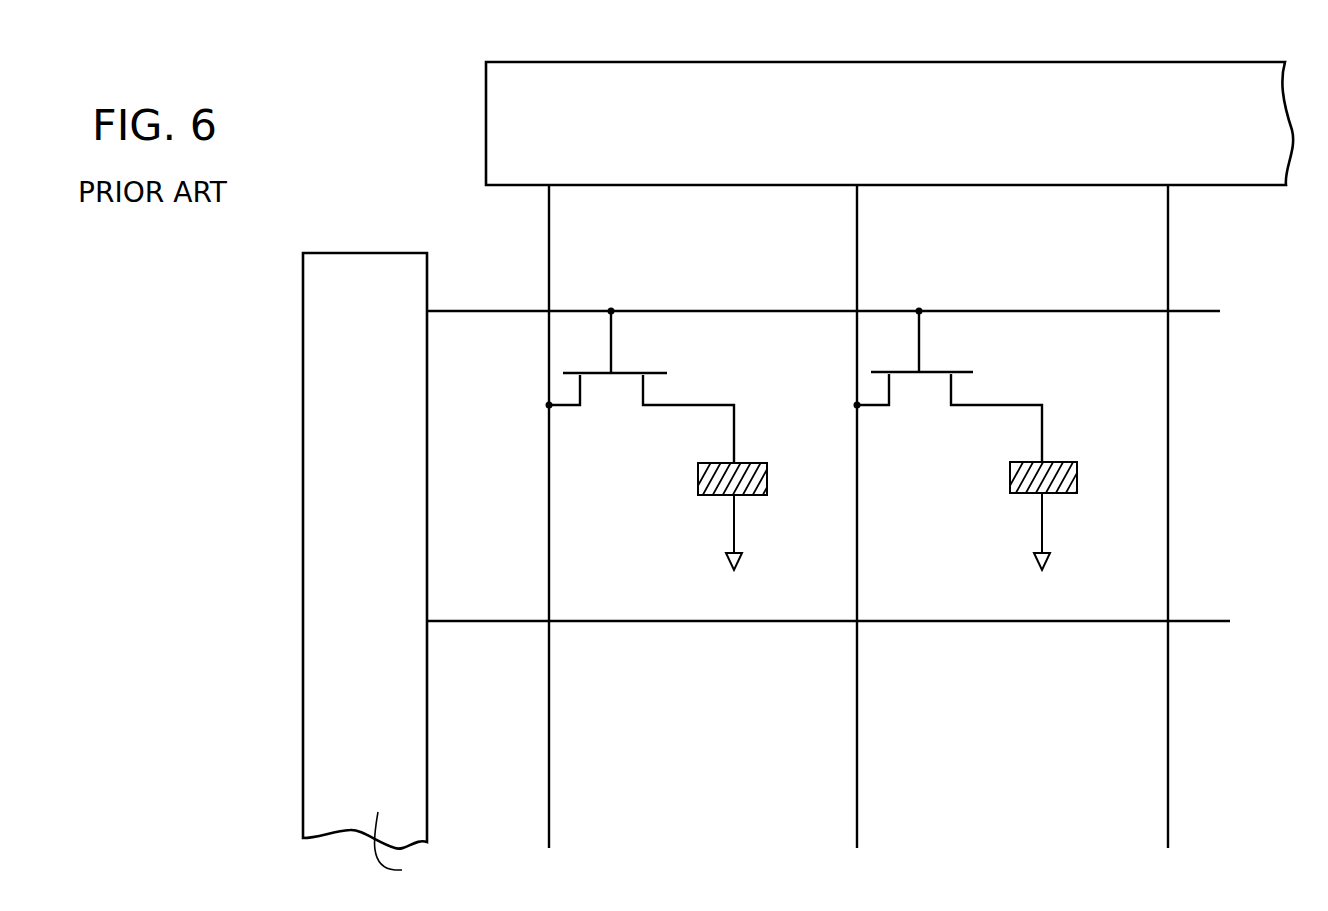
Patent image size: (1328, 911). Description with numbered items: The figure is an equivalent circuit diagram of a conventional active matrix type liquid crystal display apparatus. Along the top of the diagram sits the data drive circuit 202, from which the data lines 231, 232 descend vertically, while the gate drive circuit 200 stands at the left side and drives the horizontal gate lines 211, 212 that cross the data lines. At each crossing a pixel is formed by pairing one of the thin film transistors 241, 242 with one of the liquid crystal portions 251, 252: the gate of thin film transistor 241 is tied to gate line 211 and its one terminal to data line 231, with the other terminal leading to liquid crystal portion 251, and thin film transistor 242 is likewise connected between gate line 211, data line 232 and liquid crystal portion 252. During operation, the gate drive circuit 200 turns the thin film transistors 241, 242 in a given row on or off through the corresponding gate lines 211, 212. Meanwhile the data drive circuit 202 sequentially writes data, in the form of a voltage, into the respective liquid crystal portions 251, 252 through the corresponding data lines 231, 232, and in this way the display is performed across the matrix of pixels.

The gate drive circuit 200 is at (330, 268).
The data drive circuit 202 is at (778, 78).
The gate line 211 is at (455, 311).
The gate line 212 is at (455, 621).
The data line 231 is at (550, 220).
The data line 232 is at (857, 232).
The thin film transistor 241 is at (613, 390).
The thin film transistor 242 is at (922, 387).
The liquid crystal portion 251 is at (763, 455).
The liquid crystal portion 252 is at (1077, 460).